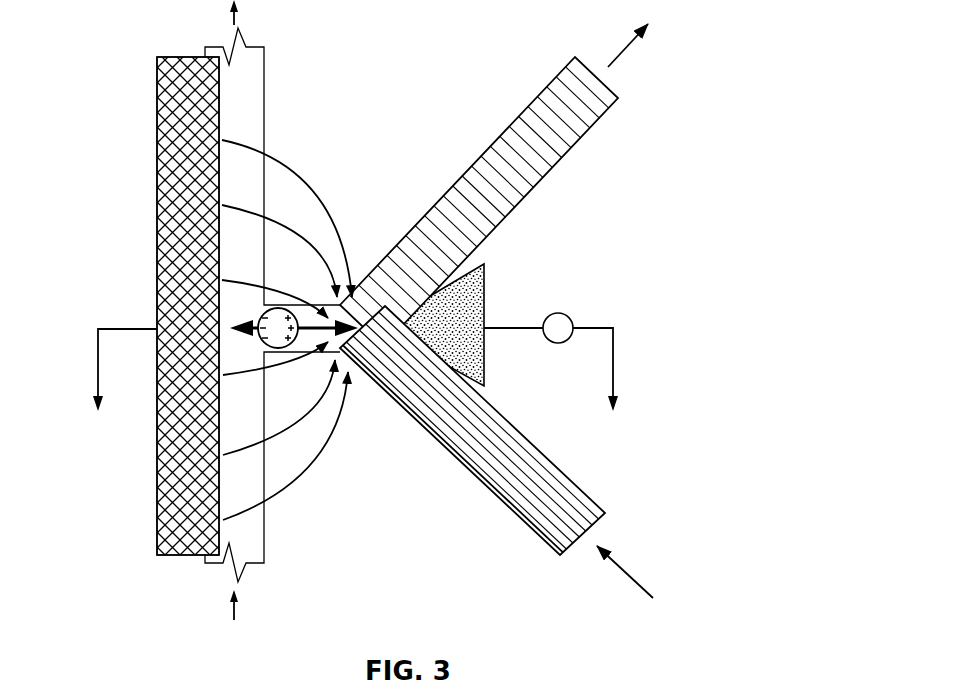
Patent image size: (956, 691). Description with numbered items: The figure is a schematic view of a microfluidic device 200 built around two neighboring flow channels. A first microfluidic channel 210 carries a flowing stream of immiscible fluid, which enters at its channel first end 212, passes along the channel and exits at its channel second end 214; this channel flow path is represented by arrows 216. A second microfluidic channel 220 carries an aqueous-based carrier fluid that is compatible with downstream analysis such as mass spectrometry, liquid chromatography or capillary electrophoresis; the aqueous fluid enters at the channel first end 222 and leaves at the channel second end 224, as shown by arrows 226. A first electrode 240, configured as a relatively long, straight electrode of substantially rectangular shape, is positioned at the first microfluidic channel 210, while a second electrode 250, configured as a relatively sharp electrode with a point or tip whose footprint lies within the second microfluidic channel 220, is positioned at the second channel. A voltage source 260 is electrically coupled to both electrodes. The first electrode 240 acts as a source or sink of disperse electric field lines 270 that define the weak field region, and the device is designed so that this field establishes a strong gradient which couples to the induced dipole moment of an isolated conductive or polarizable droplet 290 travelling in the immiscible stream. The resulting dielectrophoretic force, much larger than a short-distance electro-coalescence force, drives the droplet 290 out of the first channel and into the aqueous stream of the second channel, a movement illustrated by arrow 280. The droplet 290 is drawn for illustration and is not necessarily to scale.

The microfluidic device 200 is at (124, 27).
The first microfluidic channel 210 is at (265, 512).
The channel first end 212 is at (264, 553).
The channel second end 214 is at (264, 56).
The arrows 216 is at (237, 13).
The second microfluidic channel 220 is at (500, 500).
The channel first end 222 is at (582, 485).
The channel second end 224 is at (604, 115).
The arrows 226 is at (628, 47).
The first electrode 240 is at (182, 191).
The second electrode 250 is at (485, 353).
The voltage source 260 is at (558, 313).
The electric field lines 270 is at (320, 207).
The arrow 280 is at (352, 380).
The droplet 290 is at (275, 349).